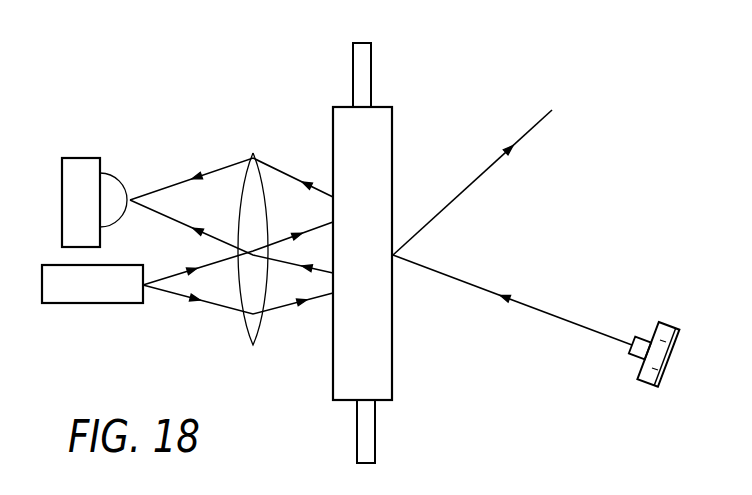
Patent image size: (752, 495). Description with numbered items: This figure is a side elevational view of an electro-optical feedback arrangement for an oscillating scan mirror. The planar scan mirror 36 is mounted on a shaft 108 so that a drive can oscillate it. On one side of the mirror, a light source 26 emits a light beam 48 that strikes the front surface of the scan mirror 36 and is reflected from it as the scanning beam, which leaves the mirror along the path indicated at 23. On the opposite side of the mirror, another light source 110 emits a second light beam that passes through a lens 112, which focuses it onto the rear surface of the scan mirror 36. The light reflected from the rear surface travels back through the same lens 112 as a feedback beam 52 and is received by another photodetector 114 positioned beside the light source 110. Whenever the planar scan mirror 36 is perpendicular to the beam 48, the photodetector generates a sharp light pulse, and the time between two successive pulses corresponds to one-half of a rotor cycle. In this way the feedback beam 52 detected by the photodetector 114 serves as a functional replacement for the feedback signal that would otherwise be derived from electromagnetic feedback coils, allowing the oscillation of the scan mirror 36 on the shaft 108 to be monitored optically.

The photodetector 114 is at (62, 160).
The light source 110 is at (67, 307).
The feedback beam 52 is at (167, 188).
The light beam 48 is at (172, 293).
The lens 112 is at (255, 346).
The scan mirror 36 is at (397, 375).
The shaft 108 is at (371, 62).
The light beam 23 is at (480, 175).
The light source 26 is at (667, 363).